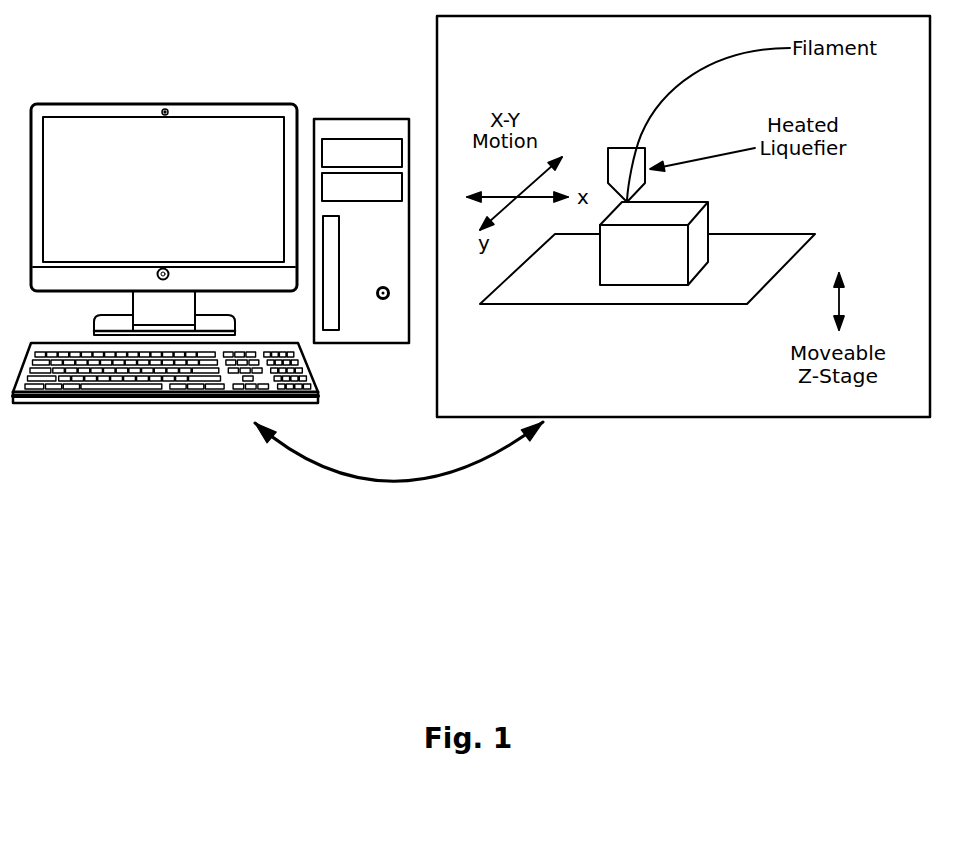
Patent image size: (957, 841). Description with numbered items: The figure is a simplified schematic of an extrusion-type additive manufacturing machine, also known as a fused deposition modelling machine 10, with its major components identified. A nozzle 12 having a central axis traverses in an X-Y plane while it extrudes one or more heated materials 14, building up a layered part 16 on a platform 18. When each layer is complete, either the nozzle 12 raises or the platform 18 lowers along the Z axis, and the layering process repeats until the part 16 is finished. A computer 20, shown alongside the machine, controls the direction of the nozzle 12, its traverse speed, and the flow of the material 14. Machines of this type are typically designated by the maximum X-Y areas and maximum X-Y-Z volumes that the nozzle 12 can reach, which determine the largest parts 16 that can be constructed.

The fused deposition modelling machine 10 is at (743, 552).
The nozzle 12 is at (612, 157).
The heated materials 14 is at (660, 100).
The layered part 16 is at (710, 218).
The platform 18 is at (672, 307).
The computer 20 is at (188, 104).